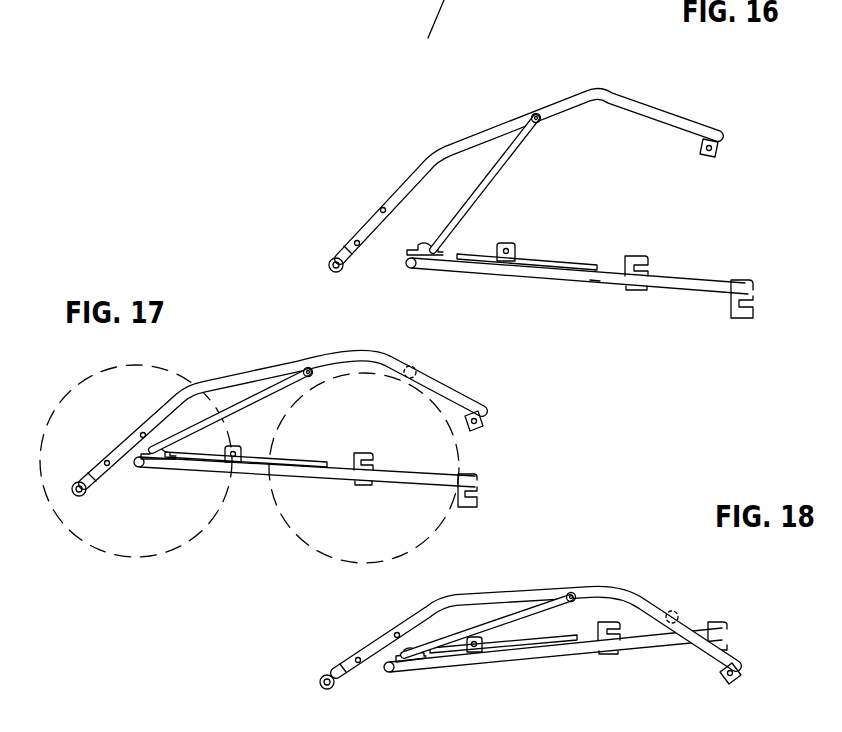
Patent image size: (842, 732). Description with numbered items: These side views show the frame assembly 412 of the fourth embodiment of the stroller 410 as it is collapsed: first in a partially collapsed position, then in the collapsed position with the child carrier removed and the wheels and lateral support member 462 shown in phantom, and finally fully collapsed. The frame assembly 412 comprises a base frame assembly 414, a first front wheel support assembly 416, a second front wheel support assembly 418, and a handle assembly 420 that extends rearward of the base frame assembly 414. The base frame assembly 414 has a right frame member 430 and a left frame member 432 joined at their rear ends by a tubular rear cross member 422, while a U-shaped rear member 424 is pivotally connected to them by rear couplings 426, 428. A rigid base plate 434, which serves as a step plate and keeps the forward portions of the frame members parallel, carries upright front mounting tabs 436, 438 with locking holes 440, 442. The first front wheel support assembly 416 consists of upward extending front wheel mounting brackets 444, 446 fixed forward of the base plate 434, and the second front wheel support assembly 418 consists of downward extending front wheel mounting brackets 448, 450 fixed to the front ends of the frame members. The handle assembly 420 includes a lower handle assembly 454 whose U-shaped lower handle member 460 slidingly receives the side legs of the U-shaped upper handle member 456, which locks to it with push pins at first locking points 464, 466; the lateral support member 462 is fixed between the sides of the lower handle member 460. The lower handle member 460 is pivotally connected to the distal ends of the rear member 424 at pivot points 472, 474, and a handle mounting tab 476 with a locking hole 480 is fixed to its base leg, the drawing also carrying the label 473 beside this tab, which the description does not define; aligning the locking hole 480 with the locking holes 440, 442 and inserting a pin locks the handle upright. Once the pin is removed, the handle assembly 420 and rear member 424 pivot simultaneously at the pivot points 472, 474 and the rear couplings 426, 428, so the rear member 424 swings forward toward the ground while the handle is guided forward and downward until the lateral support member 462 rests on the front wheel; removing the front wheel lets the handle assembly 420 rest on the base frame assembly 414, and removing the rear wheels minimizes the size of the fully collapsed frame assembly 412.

In FIG. 16, the stroller 410 is at (538, 210).
In FIG. 17, the stroller 410 is at (272, 455).
In FIG. 18, the stroller 410 is at (551, 600).
In FIG. 18, the frame assembly 412 is at (530, 600).
In FIG. 16, the base frame assembly 414 is at (574, 211).
In FIG. 17, the base frame assembly 414 is at (305, 523).
In FIG. 18, the base frame assembly 414 is at (555, 647).
In FIG. 16, the first front wheel support assembly 416 is at (306, 8).
In FIG. 16, the second front wheel support assembly 418 is at (417, 4).
In FIG. 16, the handle assembly 420 is at (513, 169).
In FIG. 17, the handle assembly 420 is at (301, 401).
In FIG. 18, the handle assembly 420 is at (493, 592).
In FIG. 16, the rear cross member 422 is at (409, 268).
In FIG. 16, the U-shaped rear member 424 is at (470, 163).
In FIG. 16, the rear coupling 426 is at (439, 285).
In FIG. 17, the rear coupling 426 is at (176, 442).
In FIG. 16, the rear coupling 428 is at (437, 258).
In FIG. 16, the right frame member 430 is at (527, 302).
In FIG. 16, the left frame member 432 is at (477, 266).
In FIG. 16, the base plate 434 is at (596, 284).
In FIG. 16, the front mounting tab 436 is at (531, 286).
In FIG. 16, the front mounting tab 438 is at (500, 246).
In FIG. 16, the locking hole 440 is at (540, 280).
In FIG. 16, the locking hole 442 is at (505, 258).
In FIG. 16, the upward extending front wheel mounting bracket 444 is at (654, 303).
In FIG. 16, the upward extending front wheel mounting bracket 446 is at (632, 292).
In FIG. 16, the downward extending front wheel mounting bracket 448 is at (574, 178).
In FIG. 16, the downward extending front wheel mounting bracket 450 is at (737, 319).
In FIG. 16, the lower handle assembly 454 is at (540, 136).
In FIG. 17, the lower handle assembly 454 is at (232, 409).
In FIG. 18, the lower handle assembly 454 is at (490, 624).
In FIG. 16, the U-shaped upper handle member 456 is at (330, 263).
In FIG. 16, the U-shaped lower handle member 460 is at (455, 147).
In FIG. 17, the lateral support member 462 is at (420, 376).
In FIG. 16, the first locking point 464 is at (324, 207).
In FIG. 16, the first locking point 466 is at (378, 207).
In FIG. 16, the pivot point 472 is at (514, 86).
In FIG. 16, the fastener 473 is at (694, 176).
In FIG. 16, the pivot point 474 is at (536, 113).
In FIG. 16, the handle mounting tab 476 is at (706, 151).
In FIG. 16, the locking hole 480 is at (712, 159).